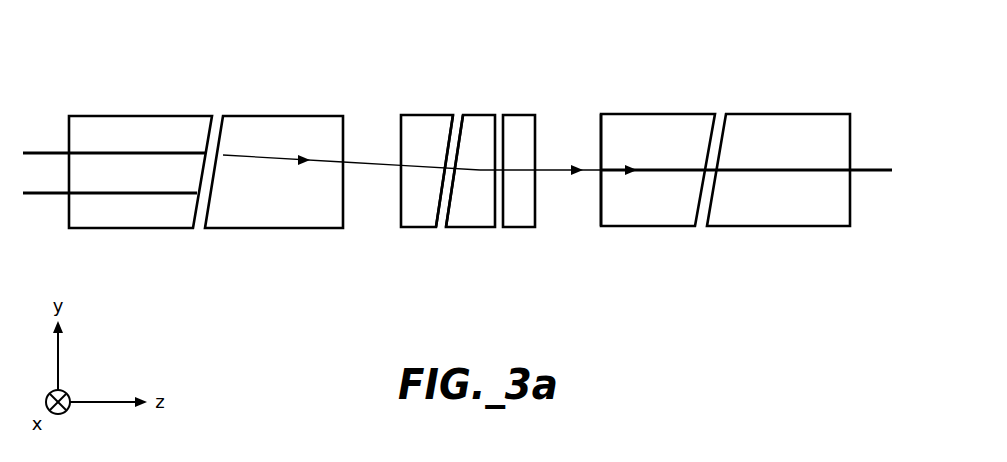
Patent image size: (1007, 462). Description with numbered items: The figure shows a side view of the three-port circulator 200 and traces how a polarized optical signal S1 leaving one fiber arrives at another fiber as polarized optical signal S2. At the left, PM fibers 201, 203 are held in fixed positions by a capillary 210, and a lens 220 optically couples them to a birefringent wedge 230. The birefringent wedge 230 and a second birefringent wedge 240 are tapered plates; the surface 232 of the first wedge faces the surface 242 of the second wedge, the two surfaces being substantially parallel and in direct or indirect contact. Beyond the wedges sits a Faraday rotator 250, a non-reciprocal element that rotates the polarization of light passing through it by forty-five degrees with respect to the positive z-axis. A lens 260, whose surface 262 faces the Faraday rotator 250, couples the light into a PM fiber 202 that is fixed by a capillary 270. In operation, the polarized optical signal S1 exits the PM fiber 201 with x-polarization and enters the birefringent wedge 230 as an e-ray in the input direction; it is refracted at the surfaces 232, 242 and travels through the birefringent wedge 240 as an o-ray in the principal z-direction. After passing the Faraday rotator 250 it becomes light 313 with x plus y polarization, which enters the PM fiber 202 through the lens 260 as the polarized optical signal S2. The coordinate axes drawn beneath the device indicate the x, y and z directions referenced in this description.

The three-port circulator 200 is at (156, 33).
The PM fiber 201 is at (37, 151).
The PM fiber 203 is at (43, 194).
The capillary 210 is at (103, 116).
The lens 220 is at (277, 115).
The polarized optical signal S1 is at (238, 156).
The birefringent wedge 230 is at (408, 115).
The surface 232 is at (433, 218).
The birefringent wedge 240 is at (477, 115).
The surface 242 is at (455, 218).
The Faraday rotator 250 is at (512, 115).
The light 313 is at (552, 170).
The lens 260 is at (633, 114).
The surface 262 is at (599, 216).
The polarized optical signal S2 is at (655, 172).
The capillary 270 is at (813, 114).
The PM fiber 202 is at (887, 168).